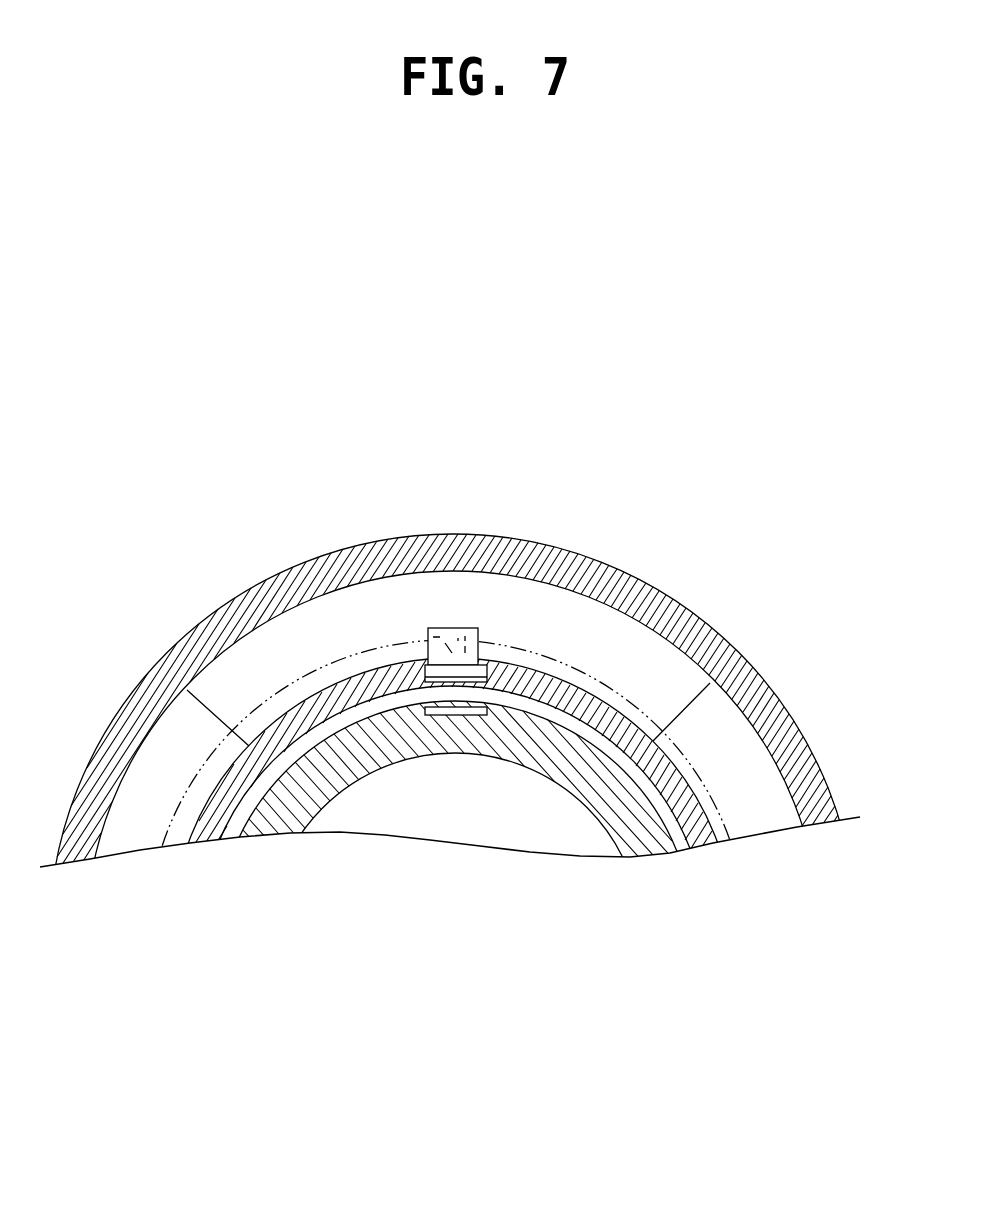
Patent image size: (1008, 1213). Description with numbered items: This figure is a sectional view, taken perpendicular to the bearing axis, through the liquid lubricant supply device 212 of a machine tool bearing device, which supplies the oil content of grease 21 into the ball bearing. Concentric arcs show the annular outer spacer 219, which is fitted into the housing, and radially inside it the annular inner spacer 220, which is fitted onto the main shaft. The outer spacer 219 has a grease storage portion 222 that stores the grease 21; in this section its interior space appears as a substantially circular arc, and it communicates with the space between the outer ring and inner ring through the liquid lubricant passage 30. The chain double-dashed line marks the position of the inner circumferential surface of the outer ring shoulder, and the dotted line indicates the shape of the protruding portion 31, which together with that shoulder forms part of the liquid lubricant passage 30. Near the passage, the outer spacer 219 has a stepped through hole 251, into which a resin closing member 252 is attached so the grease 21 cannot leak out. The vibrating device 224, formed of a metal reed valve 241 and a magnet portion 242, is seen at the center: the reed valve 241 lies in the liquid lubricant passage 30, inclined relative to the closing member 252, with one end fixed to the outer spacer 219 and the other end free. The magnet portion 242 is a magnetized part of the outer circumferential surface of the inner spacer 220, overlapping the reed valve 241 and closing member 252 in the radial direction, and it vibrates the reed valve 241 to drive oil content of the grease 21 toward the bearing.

The grease 21 is at (550, 643).
The liquid lubricant supply device 212 is at (495, 524).
The outer spacer 219 is at (625, 598).
The inner spacer 220 is at (480, 743).
The grease storage portion 222 is at (372, 605).
The vibrating device 224 is at (473, 362).
The reed valve 241 is at (468, 707).
The magnet portion 242 is at (443, 628).
The stepped through hole 251 is at (445, 682).
The closing member 252 is at (428, 682).
The liquid lubricant passage 30 is at (427, 637).
The protruding portion 31 is at (487, 663).